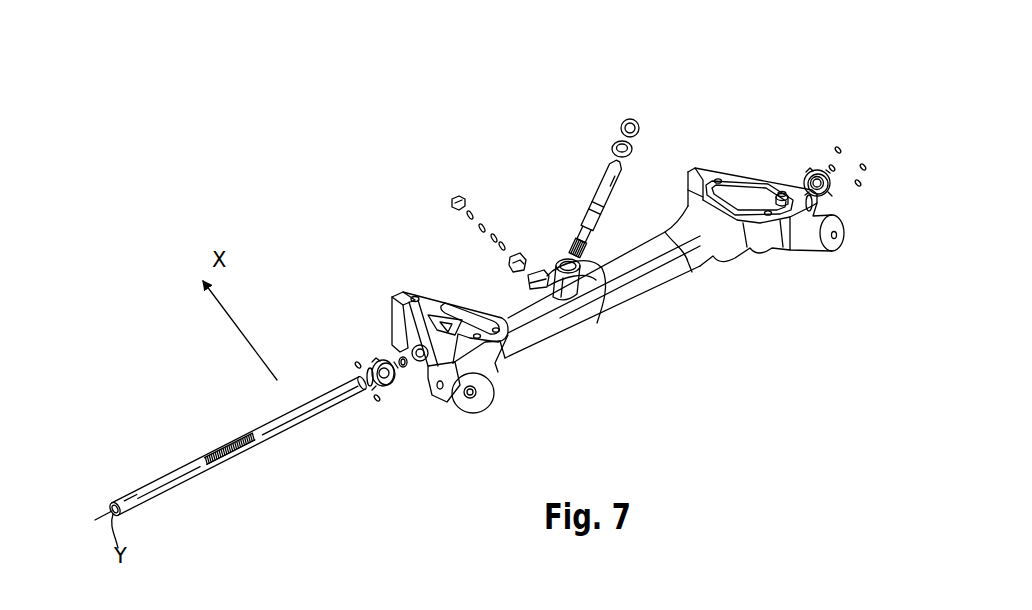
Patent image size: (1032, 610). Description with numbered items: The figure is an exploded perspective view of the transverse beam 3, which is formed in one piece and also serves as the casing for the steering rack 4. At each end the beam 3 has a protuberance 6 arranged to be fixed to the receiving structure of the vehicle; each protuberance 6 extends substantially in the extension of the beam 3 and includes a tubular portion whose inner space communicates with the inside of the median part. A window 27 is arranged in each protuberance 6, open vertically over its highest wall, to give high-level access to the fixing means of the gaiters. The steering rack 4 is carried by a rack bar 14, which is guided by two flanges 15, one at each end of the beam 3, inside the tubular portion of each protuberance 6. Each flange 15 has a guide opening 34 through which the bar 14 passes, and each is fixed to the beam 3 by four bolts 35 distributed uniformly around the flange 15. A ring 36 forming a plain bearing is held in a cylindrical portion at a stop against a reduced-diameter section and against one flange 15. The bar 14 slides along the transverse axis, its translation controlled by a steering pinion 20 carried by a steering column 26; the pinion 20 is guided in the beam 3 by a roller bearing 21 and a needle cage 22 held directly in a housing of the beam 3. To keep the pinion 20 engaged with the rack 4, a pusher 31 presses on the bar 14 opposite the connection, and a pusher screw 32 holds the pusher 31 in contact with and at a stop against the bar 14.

The transverse beam 3 is at (691, 280).
The steering rack 4 is at (292, 426).
The protuberances 6 is at (759, 179).
The rack bar 14 is at (222, 466).
The flanges 15 is at (386, 387).
The steering pinion 20 is at (569, 246).
The roller bearing 21 is at (611, 141).
The needle cage 22 is at (600, 286).
The steering column 26 is at (592, 189).
The window 27 is at (475, 397).
The pusher 31 is at (526, 254).
The pusher screw 32 is at (450, 204).
The guide opening 34 is at (366, 377).
The bolts 35 is at (377, 402).
The ring 36 is at (406, 368).